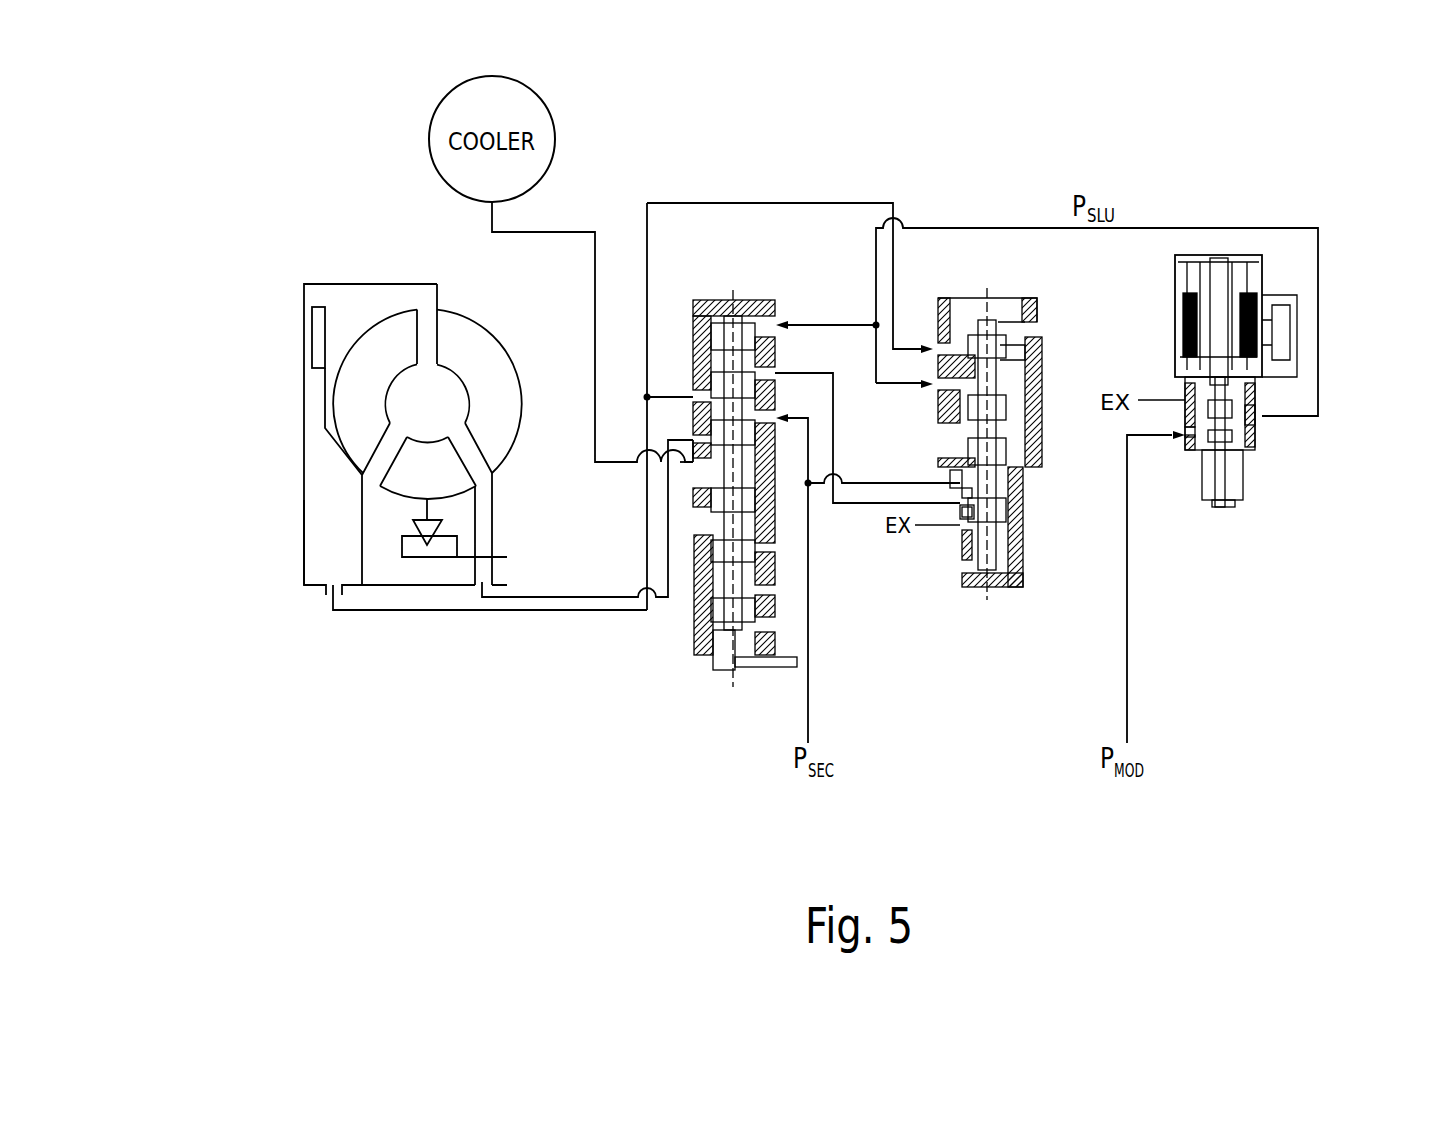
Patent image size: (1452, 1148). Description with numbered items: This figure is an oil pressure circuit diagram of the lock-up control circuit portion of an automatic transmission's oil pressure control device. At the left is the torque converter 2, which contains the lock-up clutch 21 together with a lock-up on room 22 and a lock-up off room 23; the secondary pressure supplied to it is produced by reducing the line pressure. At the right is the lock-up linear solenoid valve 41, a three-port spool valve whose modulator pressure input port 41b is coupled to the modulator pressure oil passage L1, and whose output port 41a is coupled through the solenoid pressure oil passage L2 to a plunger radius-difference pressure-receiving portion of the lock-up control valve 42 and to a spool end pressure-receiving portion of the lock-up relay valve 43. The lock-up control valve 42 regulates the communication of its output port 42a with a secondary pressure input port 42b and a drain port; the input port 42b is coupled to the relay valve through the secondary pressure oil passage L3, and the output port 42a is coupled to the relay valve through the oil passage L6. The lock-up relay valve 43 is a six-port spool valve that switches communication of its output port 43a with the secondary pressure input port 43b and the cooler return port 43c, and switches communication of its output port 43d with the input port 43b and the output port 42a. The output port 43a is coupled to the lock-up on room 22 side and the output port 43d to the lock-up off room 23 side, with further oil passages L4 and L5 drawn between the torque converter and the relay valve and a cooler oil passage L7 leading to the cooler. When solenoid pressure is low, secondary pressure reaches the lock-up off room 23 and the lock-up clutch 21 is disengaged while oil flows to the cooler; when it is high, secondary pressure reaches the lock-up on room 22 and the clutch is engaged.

The torque converter 2 is at (468, 312).
The lock-up clutch 21 is at (312, 329).
The lock-up on room 22 is at (340, 293).
The lock-up off room 23 is at (318, 517).
The lock-up linear solenoid valve 41 is at (1222, 518).
The output port 41a is at (1255, 420).
The modulator pressure input port 41b is at (1183, 444).
The lock-up control valve 42 is at (1014, 274).
The output port 42a is at (960, 511).
The secondary pressure input port 42b is at (960, 480).
The lock-up relay valve 43 is at (767, 275).
The output port 43a is at (693, 436).
The secondary pressure input port 43b is at (776, 372).
The cooler return port 43c is at (693, 466).
The output port 43d is at (692, 391).
The modulator pressure oil passage L1 is at (1128, 660).
The solenoid pressure oil passage L2 is at (1260, 227).
The secondary pressure oil passage L3 is at (810, 700).
The oil passage L4 is at (568, 594).
The oil passage L5 is at (390, 613).
The oil passage L6 is at (833, 427).
The cooler oil passage L7 is at (562, 231).